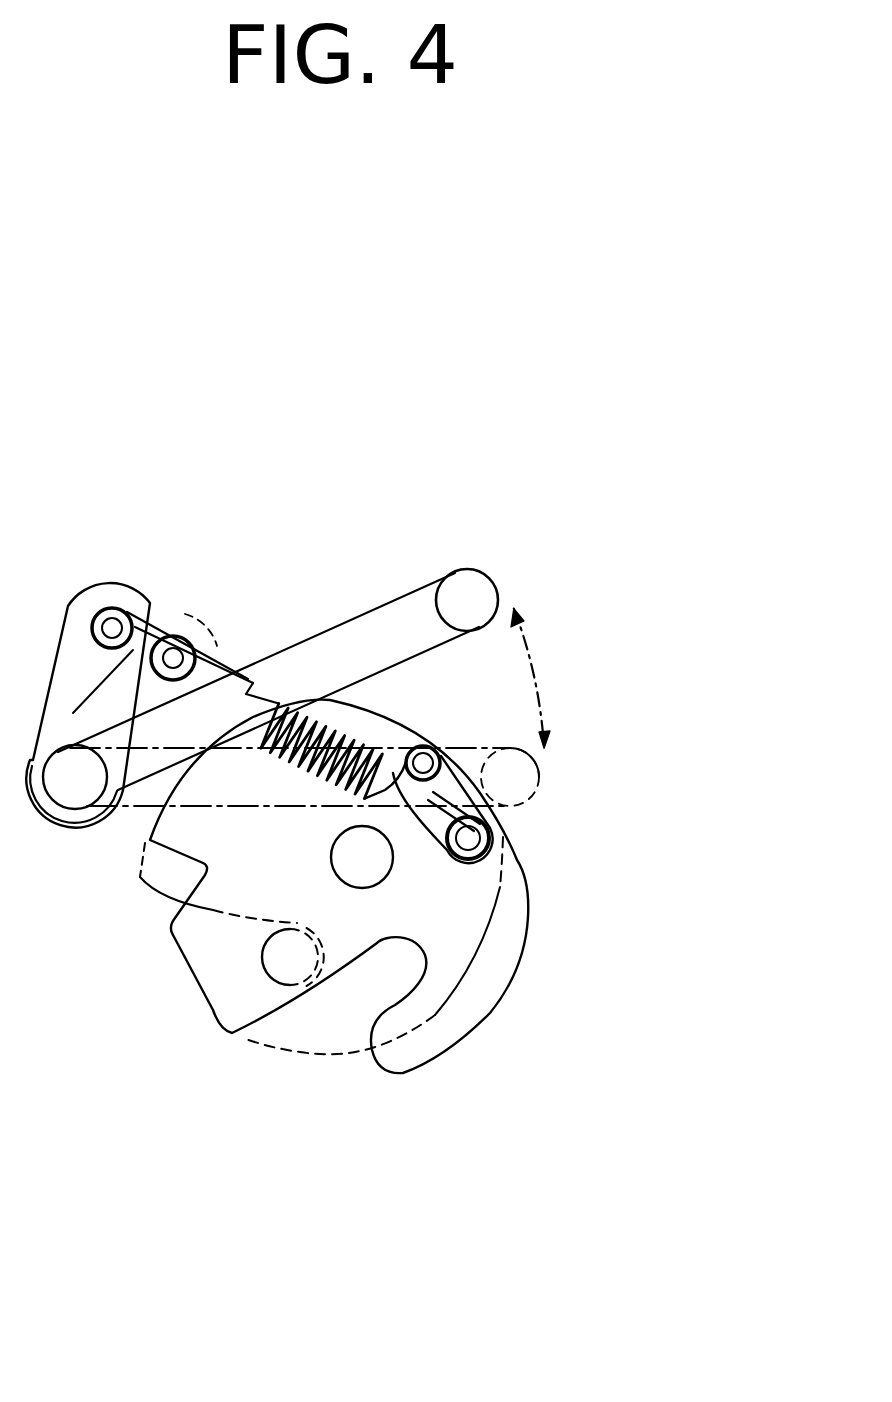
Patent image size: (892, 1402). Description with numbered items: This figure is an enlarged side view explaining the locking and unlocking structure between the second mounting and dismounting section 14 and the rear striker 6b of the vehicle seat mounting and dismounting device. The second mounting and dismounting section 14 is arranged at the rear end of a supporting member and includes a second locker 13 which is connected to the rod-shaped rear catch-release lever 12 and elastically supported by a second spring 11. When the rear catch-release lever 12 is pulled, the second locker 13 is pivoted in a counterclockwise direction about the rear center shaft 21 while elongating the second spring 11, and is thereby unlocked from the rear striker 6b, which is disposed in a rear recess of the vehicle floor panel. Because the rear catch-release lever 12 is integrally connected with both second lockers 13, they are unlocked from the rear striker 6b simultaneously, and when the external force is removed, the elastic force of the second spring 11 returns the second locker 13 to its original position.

The second spring 11 is at (328, 715).
The rear catch-release lever 12 is at (470, 570).
The second locker 13 is at (500, 973).
The second mounting and dismounting section 14 is at (590, 725).
The rear center shaft 21 is at (357, 862).
The rear striker 6b is at (277, 955).